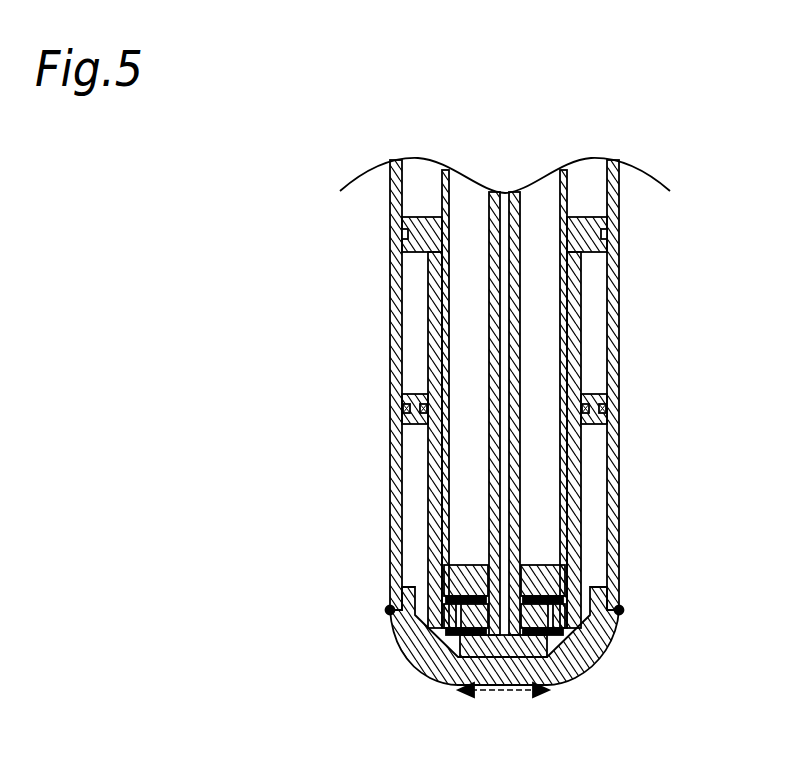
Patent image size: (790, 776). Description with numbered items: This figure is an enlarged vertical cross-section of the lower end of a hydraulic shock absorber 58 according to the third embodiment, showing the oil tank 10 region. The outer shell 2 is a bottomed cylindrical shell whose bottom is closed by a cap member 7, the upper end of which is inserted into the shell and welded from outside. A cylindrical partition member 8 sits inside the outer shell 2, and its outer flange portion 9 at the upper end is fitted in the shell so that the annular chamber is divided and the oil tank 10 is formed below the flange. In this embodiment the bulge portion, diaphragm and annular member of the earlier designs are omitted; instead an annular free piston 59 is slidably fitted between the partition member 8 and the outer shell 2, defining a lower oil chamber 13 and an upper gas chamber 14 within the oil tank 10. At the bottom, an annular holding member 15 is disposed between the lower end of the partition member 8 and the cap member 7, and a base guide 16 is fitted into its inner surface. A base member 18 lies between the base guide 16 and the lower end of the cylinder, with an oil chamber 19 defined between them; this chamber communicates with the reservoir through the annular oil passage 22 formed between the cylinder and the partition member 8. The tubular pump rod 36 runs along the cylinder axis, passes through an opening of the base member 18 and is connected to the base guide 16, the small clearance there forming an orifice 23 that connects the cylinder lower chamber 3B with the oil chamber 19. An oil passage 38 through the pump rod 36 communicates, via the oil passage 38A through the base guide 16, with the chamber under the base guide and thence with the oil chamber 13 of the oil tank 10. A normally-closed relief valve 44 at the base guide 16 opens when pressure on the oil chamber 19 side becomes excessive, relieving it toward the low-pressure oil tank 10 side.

The outer shell 2 is at (614, 200).
The cylinder lower chamber 3B is at (539, 192).
The cap member 7 is at (600, 645).
The partition member 8 is at (431, 284).
The outer flange portion 9 is at (405, 218).
The oil tank 10 is at (626, 367).
The lower oil chamber 13 is at (412, 500).
The upper gas chamber 14 is at (412, 328).
The holding member 15 is at (440, 646).
The base guide 16 is at (433, 620).
The base member 18 is at (441, 583).
The oil chamber 19 is at (564, 590).
The annular oil passage 22 is at (577, 540).
The orifice 23 is at (479, 563).
The pump rod 36 is at (516, 300).
The oil passage 38 is at (506, 324).
The oil passage 38A is at (548, 691).
The relief valve 44 is at (504, 643).
The hydraulic shock absorber 58 is at (660, 162).
The free piston 59 is at (592, 418).